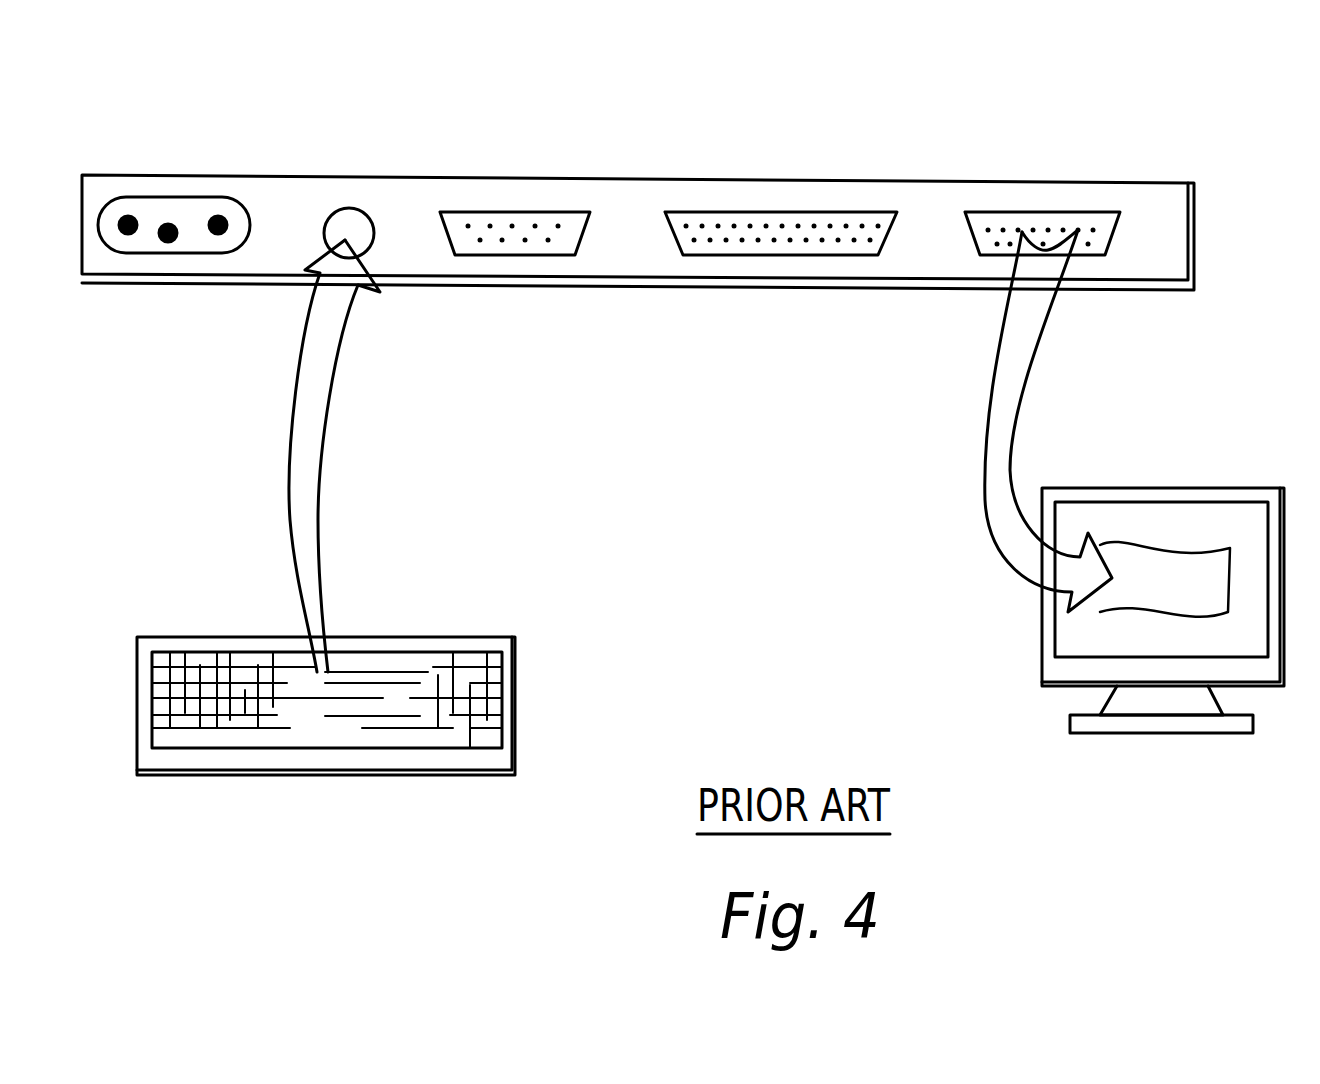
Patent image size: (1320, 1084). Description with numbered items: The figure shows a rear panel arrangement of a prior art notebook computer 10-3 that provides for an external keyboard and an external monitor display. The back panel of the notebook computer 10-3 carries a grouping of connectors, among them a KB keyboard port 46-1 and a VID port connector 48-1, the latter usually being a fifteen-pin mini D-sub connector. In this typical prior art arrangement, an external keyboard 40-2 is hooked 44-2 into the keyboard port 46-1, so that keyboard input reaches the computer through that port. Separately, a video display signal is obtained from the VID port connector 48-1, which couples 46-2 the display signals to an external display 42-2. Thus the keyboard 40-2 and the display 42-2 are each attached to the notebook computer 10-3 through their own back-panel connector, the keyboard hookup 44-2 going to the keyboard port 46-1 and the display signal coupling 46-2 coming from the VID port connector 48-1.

The notebook computer 10-3 is at (273, 178).
The keyboard port 46-1 is at (377, 217).
The VID port connector 48-1 is at (1090, 213).
The keyboard connection 44-2 is at (322, 513).
The external keyboard 40-2 is at (397, 707).
The display signal coupling 46-2 is at (980, 423).
The external display 42-2 is at (1040, 643).